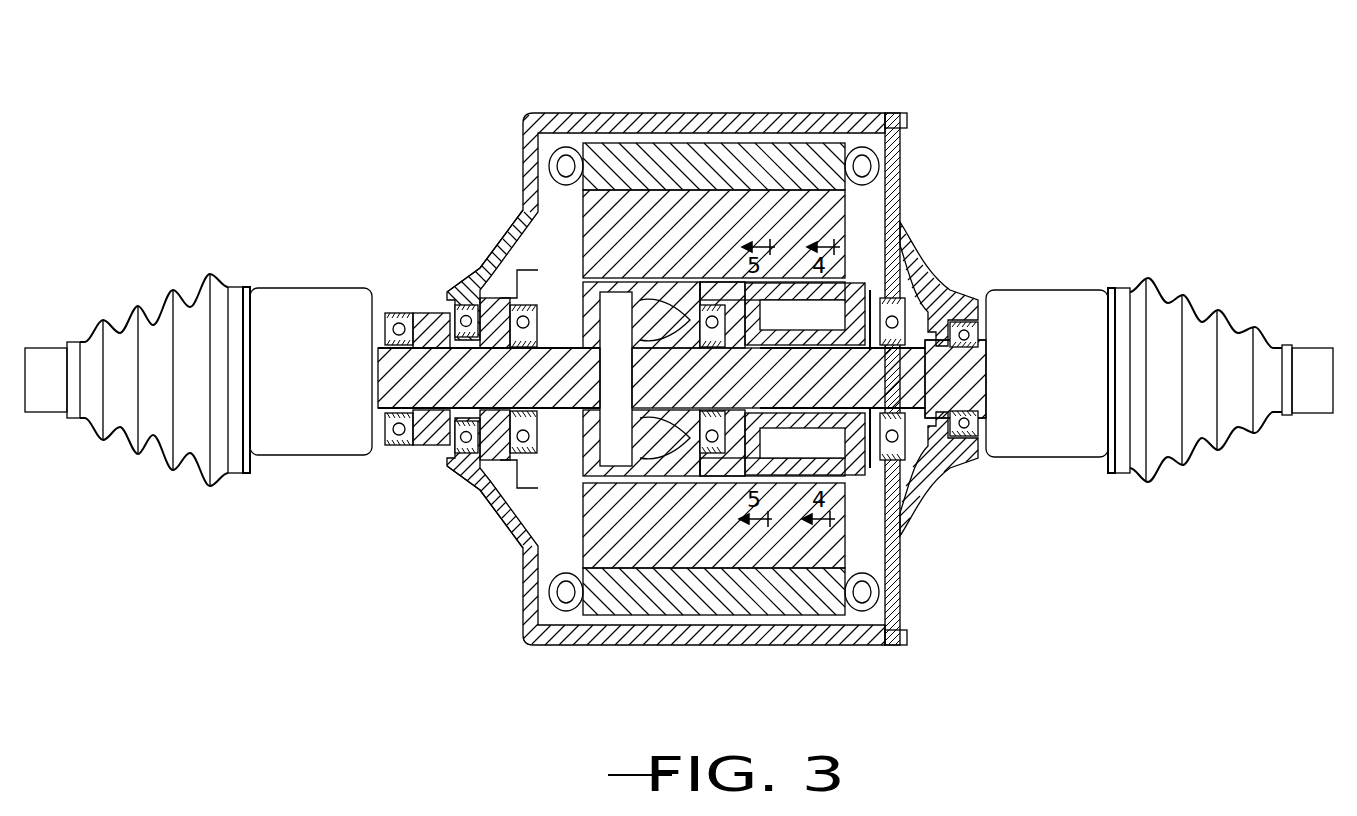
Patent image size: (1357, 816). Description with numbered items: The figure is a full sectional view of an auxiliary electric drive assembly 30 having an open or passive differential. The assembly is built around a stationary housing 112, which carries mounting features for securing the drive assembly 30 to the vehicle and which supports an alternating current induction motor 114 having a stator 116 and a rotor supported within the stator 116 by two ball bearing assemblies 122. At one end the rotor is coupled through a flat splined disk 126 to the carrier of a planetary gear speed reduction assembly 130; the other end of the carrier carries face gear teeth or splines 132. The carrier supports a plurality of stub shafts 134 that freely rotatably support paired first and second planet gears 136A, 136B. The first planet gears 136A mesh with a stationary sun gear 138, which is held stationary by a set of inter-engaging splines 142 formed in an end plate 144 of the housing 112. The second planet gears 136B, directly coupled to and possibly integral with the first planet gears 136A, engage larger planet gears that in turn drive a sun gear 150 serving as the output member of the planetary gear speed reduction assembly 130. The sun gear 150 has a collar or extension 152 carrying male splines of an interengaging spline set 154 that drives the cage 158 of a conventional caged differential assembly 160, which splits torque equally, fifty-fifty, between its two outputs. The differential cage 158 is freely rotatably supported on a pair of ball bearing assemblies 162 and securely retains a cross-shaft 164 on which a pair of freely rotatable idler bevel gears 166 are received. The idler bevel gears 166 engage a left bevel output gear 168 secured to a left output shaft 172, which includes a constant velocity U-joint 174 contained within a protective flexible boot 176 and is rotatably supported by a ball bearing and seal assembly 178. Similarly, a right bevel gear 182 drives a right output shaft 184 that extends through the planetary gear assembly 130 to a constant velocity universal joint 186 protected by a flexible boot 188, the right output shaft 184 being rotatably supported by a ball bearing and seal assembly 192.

The auxiliary electric drive assembly 30 is at (818, 52).
The stationary housing 112 is at (555, 118).
The alternating current induction motor 114 is at (690, 165).
The stator 116 is at (770, 276).
The ball bearing assemblies 122 is at (470, 302).
The flat splined disk 126 is at (882, 296).
The planetary gear speed reduction assembly 130 is at (949, 379).
The face gear teeth or splines 132 is at (647, 423).
The stub shafts 134 is at (871, 347).
The first planet gears 136A is at (840, 292).
The second planet gears 136B is at (793, 476).
The stationary sun gear 138 is at (942, 430).
The inter-engaging splines 142 is at (981, 415).
The end plate 144 is at (946, 304).
The sun gear 150 is at (800, 405).
The collar or extension 152 is at (714, 375).
The interengaging spline set 154 is at (712, 348).
The cage 158 is at (668, 315).
The caged differential assembly 160 is at (500, 220).
The ball bearing assemblies 162 is at (500, 456).
The cross-shaft 164 is at (614, 344).
The idler bevel gears 166 is at (560, 302).
The left bevel output gear 168 is at (538, 462).
The left output shaft 172 is at (427, 392).
The constant velocity U-joint 174 is at (290, 395).
The protective flexible boot 176 is at (212, 272).
The ball bearing and seal assembly 178 is at (394, 306).
The right bevel gear 182 is at (645, 458).
The right output shaft 184 is at (956, 380).
The constant velocity universal joint 186 is at (1220, 355).
The flexible boot 188 is at (1216, 433).
The ball bearing and seal assembly 192 is at (975, 320).